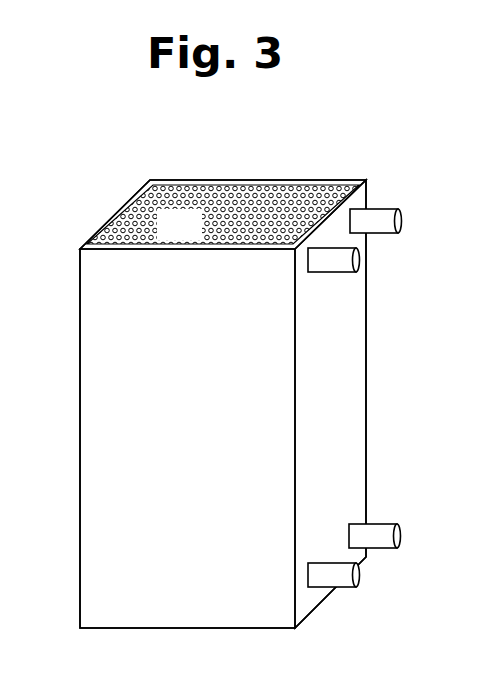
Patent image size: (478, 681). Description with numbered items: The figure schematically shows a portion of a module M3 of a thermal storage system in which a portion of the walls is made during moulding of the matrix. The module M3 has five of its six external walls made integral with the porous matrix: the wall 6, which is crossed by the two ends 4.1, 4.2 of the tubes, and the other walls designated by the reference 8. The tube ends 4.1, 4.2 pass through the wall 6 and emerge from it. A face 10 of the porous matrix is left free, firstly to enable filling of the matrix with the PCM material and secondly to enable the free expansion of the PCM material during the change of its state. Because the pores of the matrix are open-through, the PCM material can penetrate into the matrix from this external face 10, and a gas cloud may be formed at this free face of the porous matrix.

The module M3 is at (54, 262).
The face of the porous matrix 10 is at (230, 198).
The walls 8 is at (158, 425).
The wall 6 is at (335, 376).
The end of the tubes 4.1 is at (383, 222).
The end of the tubes 4.2 is at (383, 537).